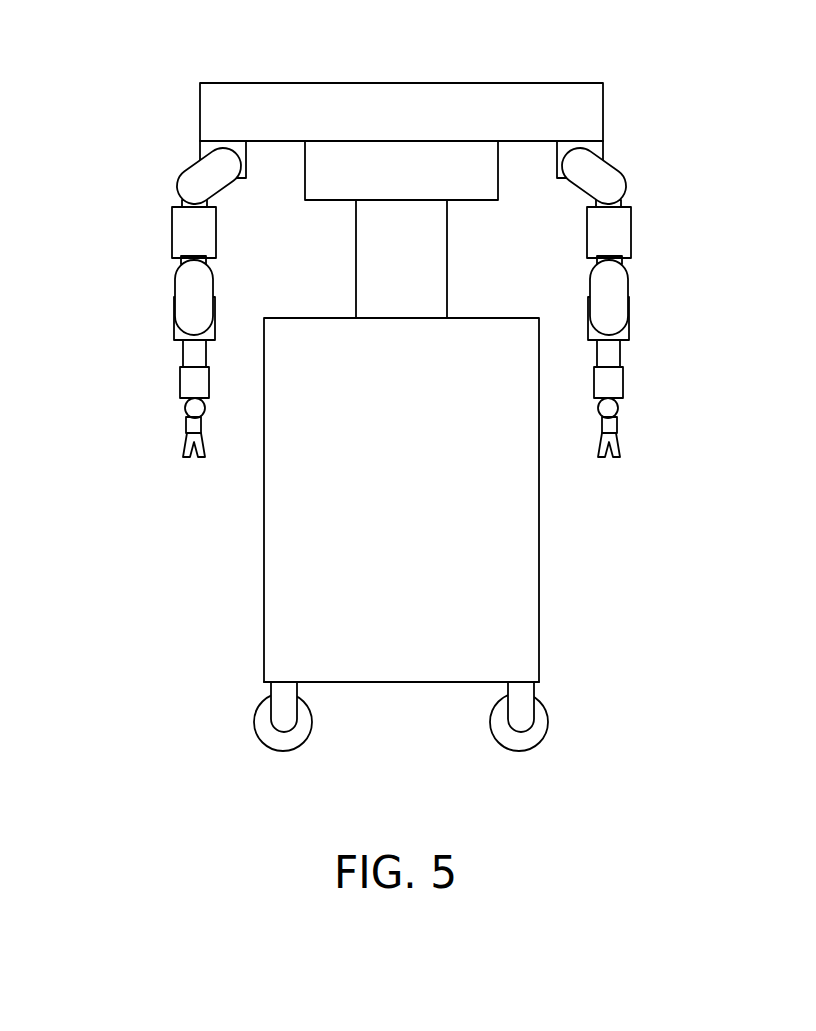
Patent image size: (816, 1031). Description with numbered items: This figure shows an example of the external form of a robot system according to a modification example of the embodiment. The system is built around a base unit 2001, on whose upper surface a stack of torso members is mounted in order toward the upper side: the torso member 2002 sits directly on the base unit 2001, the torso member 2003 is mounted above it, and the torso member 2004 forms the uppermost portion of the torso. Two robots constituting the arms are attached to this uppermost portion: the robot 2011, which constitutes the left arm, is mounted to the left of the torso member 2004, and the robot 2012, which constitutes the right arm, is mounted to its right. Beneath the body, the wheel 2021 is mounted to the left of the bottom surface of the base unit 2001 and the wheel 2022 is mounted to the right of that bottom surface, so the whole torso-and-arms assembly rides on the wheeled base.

The base unit 2001 is at (528, 530).
The torso member 2002 is at (362, 268).
The torso member 2003 is at (308, 178).
The torso member 2004 is at (390, 88).
The robot 2011 is at (650, 238).
The robot 2012 is at (143, 238).
The wheel 2021 is at (542, 706).
The wheel 2022 is at (262, 703).